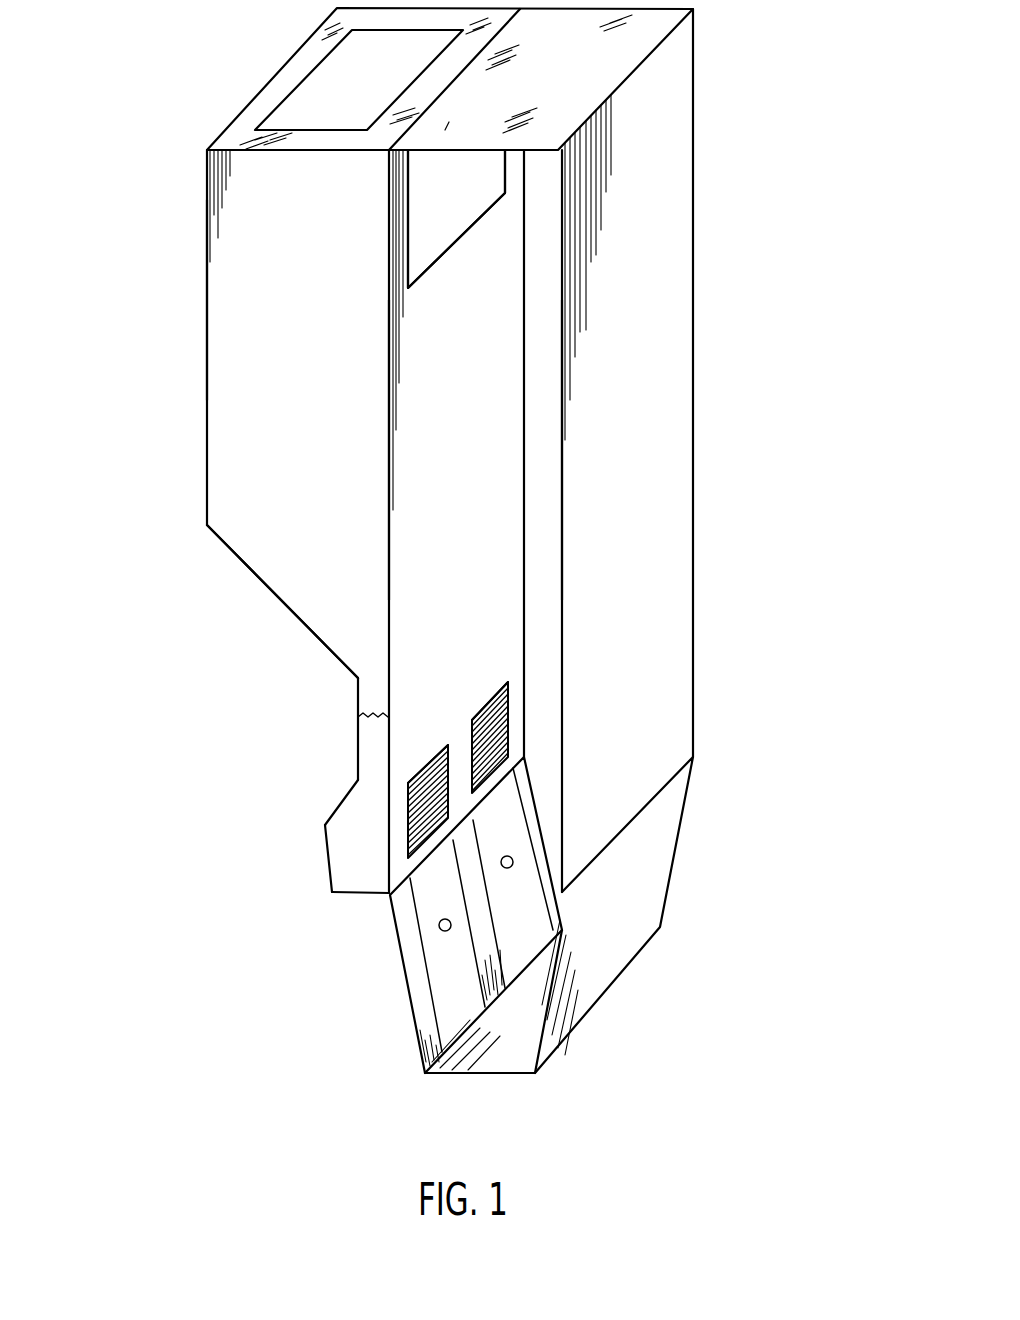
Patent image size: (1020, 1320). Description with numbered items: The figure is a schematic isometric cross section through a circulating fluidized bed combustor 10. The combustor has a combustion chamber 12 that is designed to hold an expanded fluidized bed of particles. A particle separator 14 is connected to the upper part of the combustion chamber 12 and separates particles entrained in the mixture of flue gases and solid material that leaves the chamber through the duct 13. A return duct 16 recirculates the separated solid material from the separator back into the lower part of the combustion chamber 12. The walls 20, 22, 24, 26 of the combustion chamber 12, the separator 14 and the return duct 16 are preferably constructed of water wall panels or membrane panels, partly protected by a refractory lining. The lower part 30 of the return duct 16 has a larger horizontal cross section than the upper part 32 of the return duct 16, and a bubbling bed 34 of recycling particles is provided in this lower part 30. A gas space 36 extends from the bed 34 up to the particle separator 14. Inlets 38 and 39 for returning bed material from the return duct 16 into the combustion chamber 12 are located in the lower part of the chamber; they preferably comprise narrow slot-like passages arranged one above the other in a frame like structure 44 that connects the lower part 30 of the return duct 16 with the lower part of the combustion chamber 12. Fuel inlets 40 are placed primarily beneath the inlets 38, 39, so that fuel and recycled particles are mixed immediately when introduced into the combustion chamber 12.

The circulating fluidized bed combustor 10 is at (743, 270).
The combustion chamber 12 is at (548, 625).
The duct 13 is at (440, 210).
The particle separator 14 is at (278, 379).
The return duct 16 is at (380, 752).
The wall 20 is at (390, 492).
The wall 22 is at (563, 450).
The wall 24 is at (206, 283).
The wall 26 is at (325, 873).
The lower part of the return duct 30 is at (350, 848).
The upper part of the return duct 32 is at (372, 690).
The bubbling bed 34 is at (372, 823).
The gas space 36 is at (293, 567).
The inlet 38 is at (420, 770).
The inlet 39 is at (487, 705).
The fuel inlet 40 is at (440, 930).
The frame like structure 44 is at (488, 708).